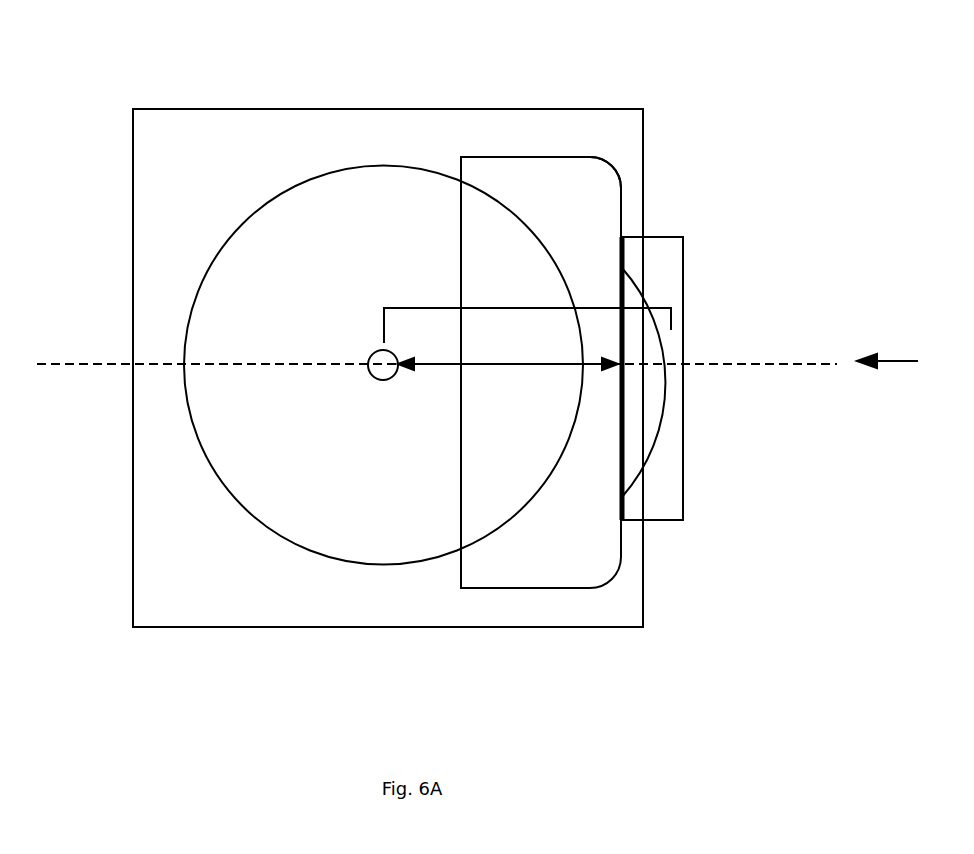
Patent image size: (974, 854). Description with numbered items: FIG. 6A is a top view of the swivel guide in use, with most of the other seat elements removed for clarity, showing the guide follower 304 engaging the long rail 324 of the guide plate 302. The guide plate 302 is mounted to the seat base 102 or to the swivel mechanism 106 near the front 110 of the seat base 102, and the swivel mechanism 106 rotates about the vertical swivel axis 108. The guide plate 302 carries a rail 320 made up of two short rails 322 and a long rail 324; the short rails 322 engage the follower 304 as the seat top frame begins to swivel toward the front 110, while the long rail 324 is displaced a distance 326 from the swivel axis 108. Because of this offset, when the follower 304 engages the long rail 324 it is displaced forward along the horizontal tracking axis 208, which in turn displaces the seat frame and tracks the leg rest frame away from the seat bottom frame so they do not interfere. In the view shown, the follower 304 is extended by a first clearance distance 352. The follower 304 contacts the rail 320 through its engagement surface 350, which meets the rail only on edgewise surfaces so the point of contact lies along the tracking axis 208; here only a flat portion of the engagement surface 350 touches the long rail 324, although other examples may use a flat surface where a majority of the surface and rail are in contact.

The seat base 102 is at (166, 135).
The swivel mechanism 106 is at (303, 282).
The swivel axis 108 is at (375, 383).
The front 110 is at (902, 358).
The tracking axis 208 is at (105, 362).
The guide plate 302 is at (533, 565).
The guide follower 304 is at (670, 260).
The rail 320 is at (603, 131).
The short rails 322 is at (525, 156).
The long rail 324 is at (620, 204).
The distance 326 is at (537, 362).
The engagement surface 350 is at (662, 400).
The first clearance distance 352 is at (503, 307).